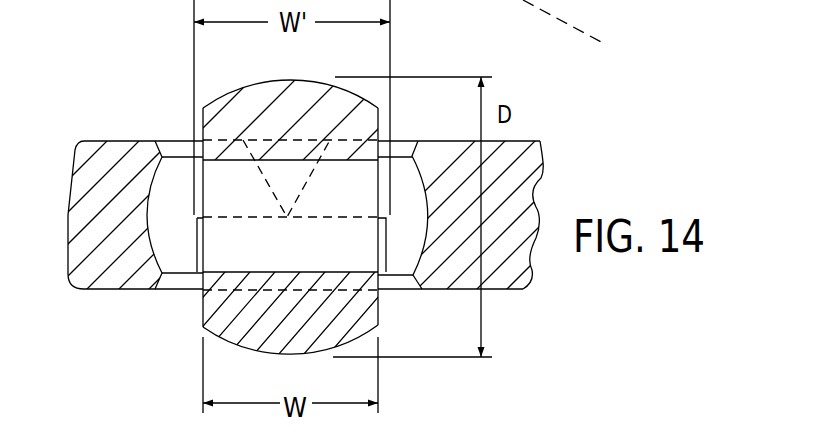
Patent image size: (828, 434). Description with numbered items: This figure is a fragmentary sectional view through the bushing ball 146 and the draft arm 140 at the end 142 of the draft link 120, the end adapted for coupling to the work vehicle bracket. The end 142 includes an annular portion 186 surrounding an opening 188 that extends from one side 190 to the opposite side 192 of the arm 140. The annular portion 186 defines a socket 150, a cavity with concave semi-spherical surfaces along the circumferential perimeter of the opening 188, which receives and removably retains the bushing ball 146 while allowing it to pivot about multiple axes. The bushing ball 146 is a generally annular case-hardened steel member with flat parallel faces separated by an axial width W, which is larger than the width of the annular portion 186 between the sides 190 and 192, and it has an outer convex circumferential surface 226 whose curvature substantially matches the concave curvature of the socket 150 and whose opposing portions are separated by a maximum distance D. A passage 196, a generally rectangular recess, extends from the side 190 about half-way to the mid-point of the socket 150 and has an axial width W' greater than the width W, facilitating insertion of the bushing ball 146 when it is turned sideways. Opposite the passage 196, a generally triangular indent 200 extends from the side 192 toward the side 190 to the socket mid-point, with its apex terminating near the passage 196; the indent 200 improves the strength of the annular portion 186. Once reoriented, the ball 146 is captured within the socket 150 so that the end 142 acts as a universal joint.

The draft link 120 is at (428, 50).
The arm 140 is at (491, 200).
The end 142 is at (143, 64).
The bushing ball 146 is at (276, 333).
The socket 150 is at (160, 156).
The annular portion 186 is at (151, 166).
The opening 188 is at (181, 142).
The side 190 is at (513, 293).
The side 192 is at (455, 137).
The passage 196 is at (393, 284).
The indent 200 is at (297, 202).
The outer convex circumferential surface 226 is at (290, 356).